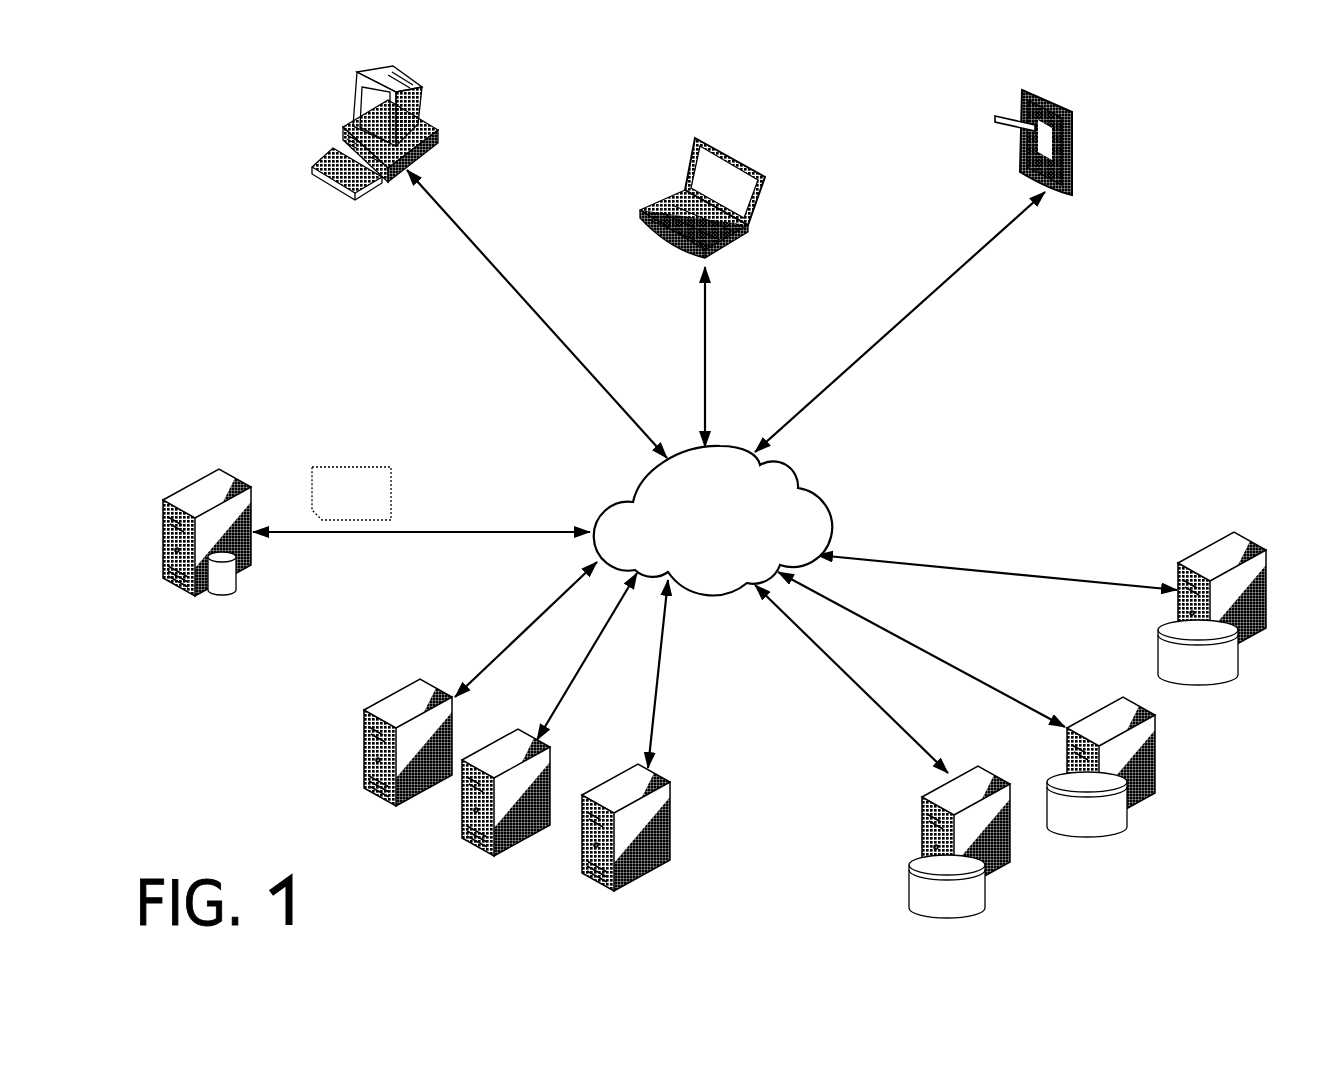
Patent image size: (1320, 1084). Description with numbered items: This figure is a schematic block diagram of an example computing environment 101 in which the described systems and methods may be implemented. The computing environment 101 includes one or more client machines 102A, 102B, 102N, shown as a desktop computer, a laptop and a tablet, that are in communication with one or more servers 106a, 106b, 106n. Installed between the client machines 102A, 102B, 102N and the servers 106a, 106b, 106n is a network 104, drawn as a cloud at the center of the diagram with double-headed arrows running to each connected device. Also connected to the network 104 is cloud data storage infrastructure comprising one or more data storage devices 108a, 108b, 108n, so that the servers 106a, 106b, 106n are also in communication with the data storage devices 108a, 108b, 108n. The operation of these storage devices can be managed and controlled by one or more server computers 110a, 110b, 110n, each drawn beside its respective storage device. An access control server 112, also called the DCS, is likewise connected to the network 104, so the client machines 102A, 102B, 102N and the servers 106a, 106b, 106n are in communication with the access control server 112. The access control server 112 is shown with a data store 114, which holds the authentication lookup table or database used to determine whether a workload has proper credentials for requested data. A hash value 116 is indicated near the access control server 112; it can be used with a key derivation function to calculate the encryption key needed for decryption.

The computing environment 101 is at (320, 341).
The client machine 102A is at (413, 90).
The client machine 102B is at (730, 150).
The client machine 102N is at (1042, 102).
The network 104 is at (713, 520).
The server 106a is at (412, 798).
The server 106b is at (505, 853).
The server 106n is at (643, 877).
The data storage device 108a is at (977, 913).
The data storage device 108b is at (1092, 832).
The data storage device 108n is at (1218, 675).
The server computer 110a is at (962, 767).
The server computer 110b is at (1117, 698).
The server computer 110n is at (1217, 540).
The access control server 112 is at (205, 475).
The data store 114 is at (230, 595).
The hash value 116 is at (351, 493).